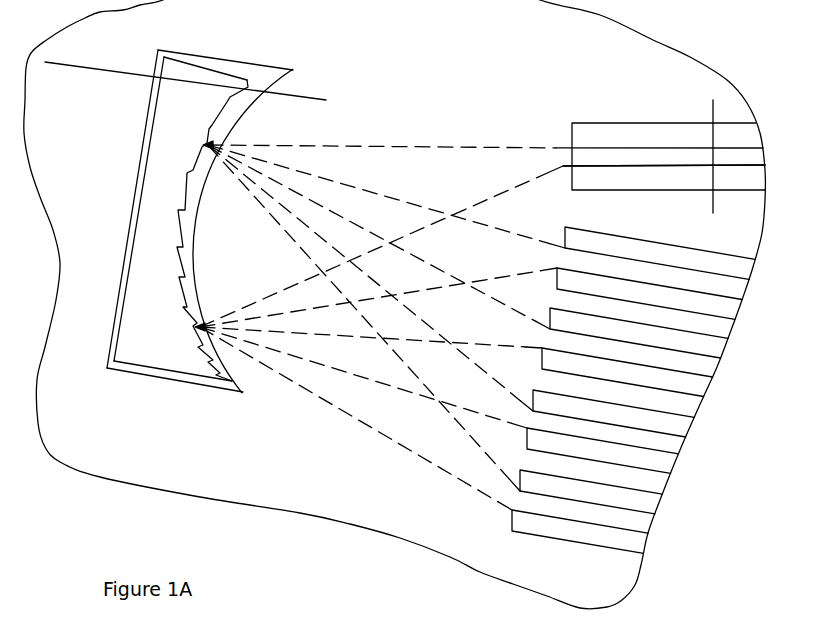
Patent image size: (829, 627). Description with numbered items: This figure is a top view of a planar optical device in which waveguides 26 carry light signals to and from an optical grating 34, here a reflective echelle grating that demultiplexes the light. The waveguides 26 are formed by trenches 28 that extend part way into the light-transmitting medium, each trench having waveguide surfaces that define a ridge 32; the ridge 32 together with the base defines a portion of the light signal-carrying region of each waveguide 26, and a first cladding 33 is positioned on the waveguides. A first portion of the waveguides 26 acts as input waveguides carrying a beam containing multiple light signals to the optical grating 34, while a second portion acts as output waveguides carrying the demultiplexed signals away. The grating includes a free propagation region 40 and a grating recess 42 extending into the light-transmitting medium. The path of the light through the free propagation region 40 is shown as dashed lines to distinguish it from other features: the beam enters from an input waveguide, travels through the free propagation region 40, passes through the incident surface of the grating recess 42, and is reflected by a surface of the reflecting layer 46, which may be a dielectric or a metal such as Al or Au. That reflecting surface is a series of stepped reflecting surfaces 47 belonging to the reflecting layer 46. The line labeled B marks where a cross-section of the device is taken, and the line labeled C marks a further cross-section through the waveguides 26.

The first cladding 33 is at (280, 496).
The grating recess 42 is at (222, 218).
The reflecting layer 46 is at (200, 62).
The reflecting surfaces 47 is at (224, 122).
The optical grating 34 is at (326, 61).
The free propagation region 40 is at (277, 273).
The waveguides 26 is at (650, 326).
The trenches 28 is at (607, 137).
The ridge 32 is at (658, 157).
The line B is at (100, 74).
The line C is at (716, 118).